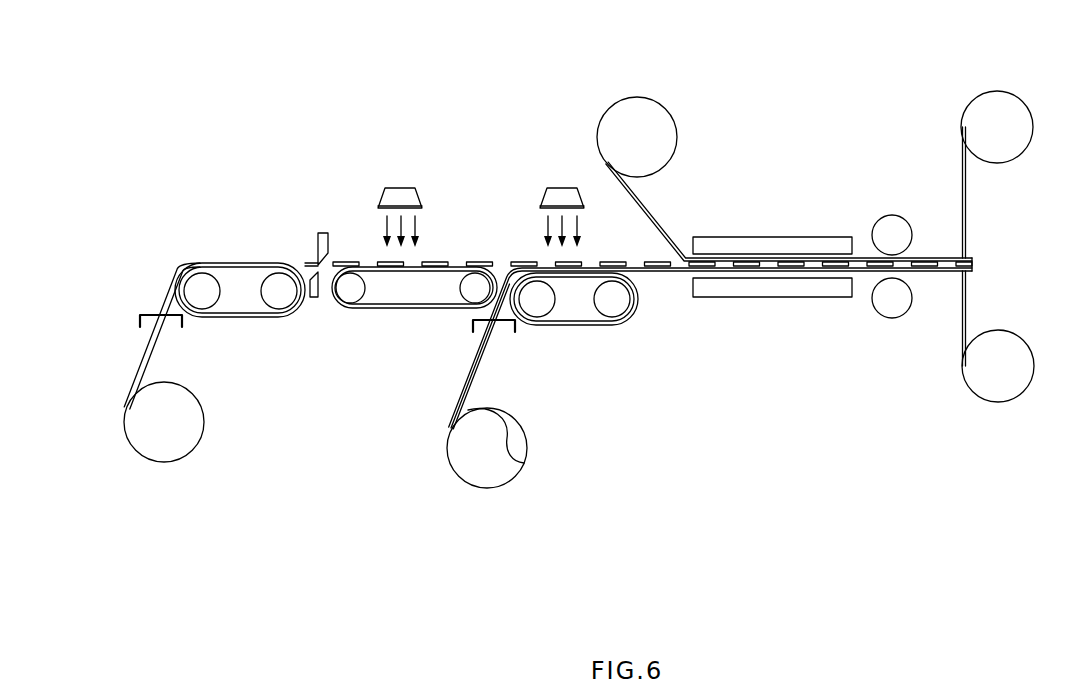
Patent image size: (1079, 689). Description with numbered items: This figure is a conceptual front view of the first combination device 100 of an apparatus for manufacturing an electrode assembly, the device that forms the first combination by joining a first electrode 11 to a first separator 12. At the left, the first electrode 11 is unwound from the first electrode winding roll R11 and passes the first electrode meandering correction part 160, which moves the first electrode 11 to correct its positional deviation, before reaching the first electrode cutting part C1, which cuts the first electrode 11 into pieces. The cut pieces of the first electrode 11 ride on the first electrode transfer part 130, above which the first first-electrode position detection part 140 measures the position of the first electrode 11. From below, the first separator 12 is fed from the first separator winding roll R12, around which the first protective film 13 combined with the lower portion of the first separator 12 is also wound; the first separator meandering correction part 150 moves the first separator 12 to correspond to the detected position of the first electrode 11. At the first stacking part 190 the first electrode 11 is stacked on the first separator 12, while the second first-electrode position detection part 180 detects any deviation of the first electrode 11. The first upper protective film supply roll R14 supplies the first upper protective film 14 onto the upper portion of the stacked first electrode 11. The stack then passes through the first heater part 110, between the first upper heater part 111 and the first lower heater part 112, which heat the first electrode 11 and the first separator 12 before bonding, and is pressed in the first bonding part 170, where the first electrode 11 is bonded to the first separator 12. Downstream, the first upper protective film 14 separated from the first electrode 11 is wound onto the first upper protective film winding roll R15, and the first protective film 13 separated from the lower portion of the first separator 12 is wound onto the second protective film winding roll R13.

The first combination device 100 is at (302, 97).
The first electrode 11 is at (349, 262).
The first separator 12 is at (456, 409).
The first protective film 13 is at (525, 463).
The first upper protective film 14 is at (662, 222).
The first heater part 110 is at (773, 216).
The first upper heater part 111 is at (728, 241).
The first lower heater part 112 is at (737, 297).
The first electrode transfer part 130 is at (367, 332).
The first first-electrode position detection part 140 is at (400, 188).
The first separator meandering correction part 150 is at (473, 321).
The first electrode meandering correction part 160 is at (140, 316).
The first bonding part 170 is at (893, 198).
The second first-electrode position detection part 180 is at (561, 188).
The first stacking part 190 is at (583, 348).
The first electrode cutting part C1 is at (312, 332).
The first electrode winding roll R11 is at (164, 453).
The first separator winding roll R12 is at (488, 477).
The second protective film winding roll R13 is at (1002, 390).
The first upper protective film supply roll R14 is at (637, 106).
The first upper protective film winding roll R15 is at (998, 98).